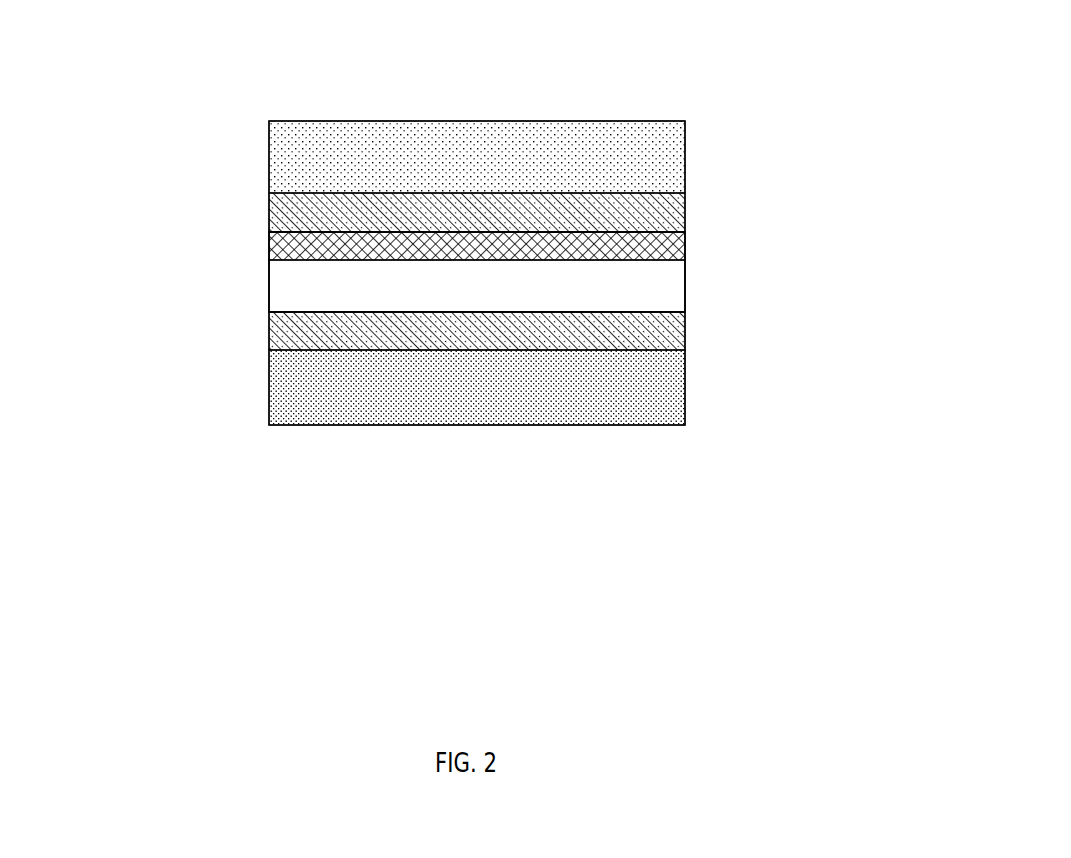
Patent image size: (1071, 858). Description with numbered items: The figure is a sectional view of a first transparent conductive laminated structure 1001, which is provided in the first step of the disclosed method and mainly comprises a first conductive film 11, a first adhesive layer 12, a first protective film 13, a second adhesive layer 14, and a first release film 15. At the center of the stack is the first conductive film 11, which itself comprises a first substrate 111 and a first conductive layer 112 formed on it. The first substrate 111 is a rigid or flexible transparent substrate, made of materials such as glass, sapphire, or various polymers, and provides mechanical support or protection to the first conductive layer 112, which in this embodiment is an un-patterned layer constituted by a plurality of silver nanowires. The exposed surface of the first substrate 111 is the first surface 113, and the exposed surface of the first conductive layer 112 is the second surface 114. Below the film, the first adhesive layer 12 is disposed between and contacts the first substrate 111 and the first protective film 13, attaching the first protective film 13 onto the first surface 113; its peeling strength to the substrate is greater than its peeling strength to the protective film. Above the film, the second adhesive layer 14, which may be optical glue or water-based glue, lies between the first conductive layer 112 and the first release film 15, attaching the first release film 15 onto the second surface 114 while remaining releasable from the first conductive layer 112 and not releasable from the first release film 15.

The first transparent conductive laminated structure 1001 is at (698, 26).
The first release film 15 is at (655, 163).
The second adhesive layer 14 is at (655, 216).
The first conductive layer 112 is at (658, 250).
The first substrate 111 is at (660, 290).
The first adhesive layer 12 is at (657, 330).
The first protective film 13 is at (657, 387).
The first conductive film 11 is at (262, 312).
The second surface 114 is at (315, 231).
The first surface 113 is at (308, 312).